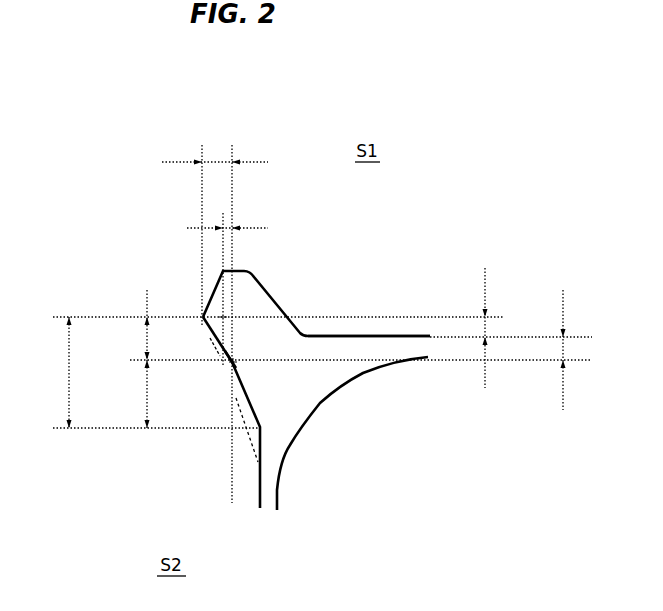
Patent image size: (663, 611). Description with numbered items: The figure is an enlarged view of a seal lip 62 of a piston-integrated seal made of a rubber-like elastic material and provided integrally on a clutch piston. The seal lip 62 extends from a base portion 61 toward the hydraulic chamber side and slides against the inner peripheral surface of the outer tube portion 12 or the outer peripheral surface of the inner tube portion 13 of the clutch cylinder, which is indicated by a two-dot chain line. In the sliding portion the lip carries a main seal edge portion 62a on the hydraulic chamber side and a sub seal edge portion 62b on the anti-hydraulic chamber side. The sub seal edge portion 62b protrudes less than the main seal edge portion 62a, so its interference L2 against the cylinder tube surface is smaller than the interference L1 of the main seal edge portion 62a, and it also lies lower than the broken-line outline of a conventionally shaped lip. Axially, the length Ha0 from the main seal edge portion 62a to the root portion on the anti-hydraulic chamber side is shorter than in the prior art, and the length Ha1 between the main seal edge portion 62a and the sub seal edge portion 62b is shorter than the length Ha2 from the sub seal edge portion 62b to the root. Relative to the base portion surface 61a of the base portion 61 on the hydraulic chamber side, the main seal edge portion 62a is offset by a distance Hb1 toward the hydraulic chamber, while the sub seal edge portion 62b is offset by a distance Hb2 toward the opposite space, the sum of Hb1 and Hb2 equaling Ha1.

The seal lip 62 is at (295, 329).
The main seal edge portion 62a is at (202, 316).
The sub seal edge portion 62b is at (225, 360).
The base portion 61 is at (362, 387).
The base portion surface 61a is at (338, 332).
The outer tube portion 12 is at (269, 466).
The inner tube portion 13 is at (233, 473).
The interference of the main seal edge portion L1 is at (228, 162).
The interference of the sub seal edge portion L2 is at (241, 228).
The length from the main seal edge portion to the root portion Ha0 is at (49, 372).
The axial length between the main and sub seal edge portions Ha1 is at (126, 325).
The axial length from the sub seal edge portion to the root portion Ha2 is at (125, 395).
The axial distance of the main seal edge portion from the base portion surface Hb1 is at (485, 314).
The axial distance of the sub seal edge portion from the base portion surface Hb2 is at (564, 336).